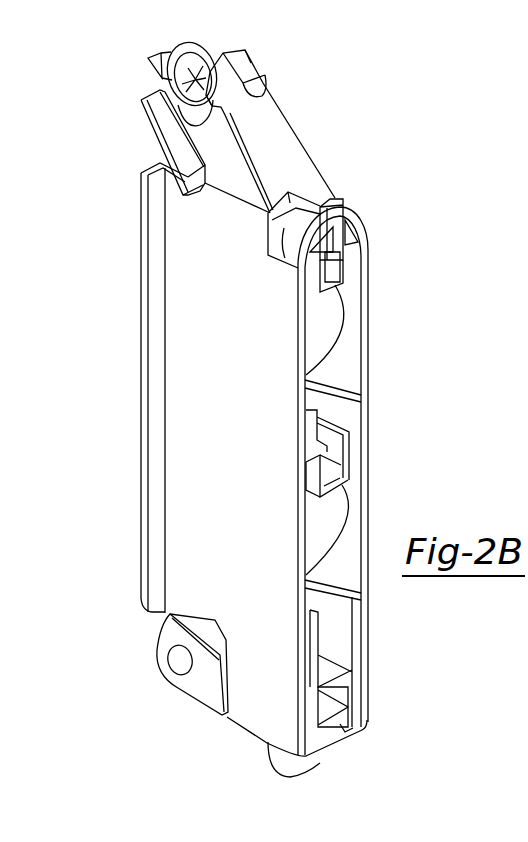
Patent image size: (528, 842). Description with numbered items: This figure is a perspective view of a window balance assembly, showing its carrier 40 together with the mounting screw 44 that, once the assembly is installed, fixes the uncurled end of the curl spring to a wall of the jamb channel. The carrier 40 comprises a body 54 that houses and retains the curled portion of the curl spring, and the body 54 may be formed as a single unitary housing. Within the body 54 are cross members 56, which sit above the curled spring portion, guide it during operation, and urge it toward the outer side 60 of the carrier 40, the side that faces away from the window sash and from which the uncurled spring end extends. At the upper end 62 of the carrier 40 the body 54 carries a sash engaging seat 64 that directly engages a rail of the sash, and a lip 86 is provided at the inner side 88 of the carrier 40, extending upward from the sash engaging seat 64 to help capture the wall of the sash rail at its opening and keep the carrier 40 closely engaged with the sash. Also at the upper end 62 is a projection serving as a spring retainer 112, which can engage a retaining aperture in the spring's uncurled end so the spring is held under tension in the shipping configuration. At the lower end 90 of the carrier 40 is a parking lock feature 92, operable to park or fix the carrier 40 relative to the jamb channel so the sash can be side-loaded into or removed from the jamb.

The carrier 40 is at (107, 628).
The screw 44 is at (147, 66).
The body 54 is at (193, 353).
The cross members 56 is at (343, 283).
The outer side 60 is at (141, 255).
The upper end 62 is at (282, 130).
The sash engaging seat 64 is at (293, 243).
The lip 86 is at (337, 203).
The inner side 88 is at (367, 312).
The lower end 90 is at (320, 763).
The parking lock feature 92 is at (147, 678).
The spring retainer 112 is at (235, 92).